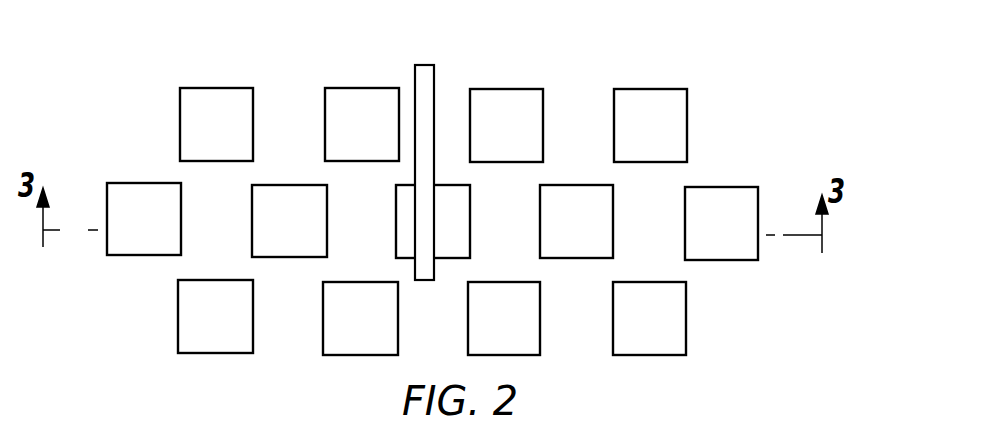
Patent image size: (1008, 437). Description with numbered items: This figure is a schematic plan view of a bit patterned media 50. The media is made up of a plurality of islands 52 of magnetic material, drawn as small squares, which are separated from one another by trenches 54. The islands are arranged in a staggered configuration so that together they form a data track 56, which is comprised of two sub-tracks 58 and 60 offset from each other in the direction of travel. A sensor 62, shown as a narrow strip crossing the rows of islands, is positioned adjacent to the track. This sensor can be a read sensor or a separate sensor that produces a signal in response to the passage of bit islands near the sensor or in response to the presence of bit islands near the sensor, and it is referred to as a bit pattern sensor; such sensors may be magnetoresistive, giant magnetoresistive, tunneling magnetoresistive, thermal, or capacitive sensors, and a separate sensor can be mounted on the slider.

The bit patterned media 50 is at (510, 178).
The islands 52 is at (338, 96).
The trenches 54 is at (583, 105).
The data track 56 is at (867, 91).
The sub-track 58 is at (730, 118).
The sub-track 60 is at (774, 173).
The sensor 62 is at (425, 78).